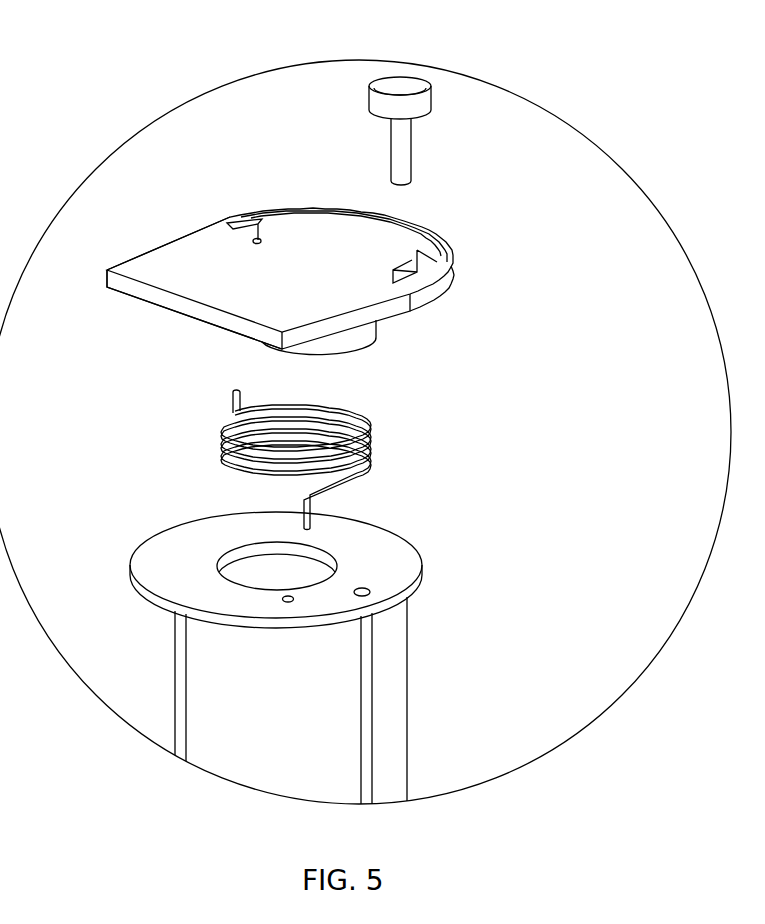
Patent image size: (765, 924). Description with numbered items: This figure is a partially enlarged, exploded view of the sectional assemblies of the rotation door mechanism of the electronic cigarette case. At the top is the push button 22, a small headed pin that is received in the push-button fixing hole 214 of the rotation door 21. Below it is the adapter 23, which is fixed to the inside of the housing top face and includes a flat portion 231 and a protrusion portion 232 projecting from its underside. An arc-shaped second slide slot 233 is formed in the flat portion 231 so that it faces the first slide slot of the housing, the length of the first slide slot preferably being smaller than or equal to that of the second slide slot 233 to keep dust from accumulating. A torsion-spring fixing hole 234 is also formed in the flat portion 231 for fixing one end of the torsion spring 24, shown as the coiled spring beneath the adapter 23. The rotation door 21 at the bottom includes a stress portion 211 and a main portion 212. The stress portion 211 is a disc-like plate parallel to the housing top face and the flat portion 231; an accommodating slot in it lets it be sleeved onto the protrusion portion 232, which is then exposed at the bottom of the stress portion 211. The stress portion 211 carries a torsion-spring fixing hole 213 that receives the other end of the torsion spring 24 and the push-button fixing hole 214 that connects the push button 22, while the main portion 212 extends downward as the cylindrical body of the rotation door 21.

The rotation door 21 is at (254, 658).
The stress portion 211 is at (393, 557).
The main portion 212 is at (385, 728).
The torsion-spring fixing hole 213 is at (293, 601).
The push-button fixing hole 214 is at (370, 593).
The push button 22 is at (398, 80).
The adapter 23 is at (290, 274).
The flat portion 231 is at (147, 264).
The protrusion portion 232 is at (375, 337).
The second slide slot 233 is at (437, 263).
The torsion-spring fixing hole 234 is at (258, 212).
The torsion spring 24 is at (232, 433).